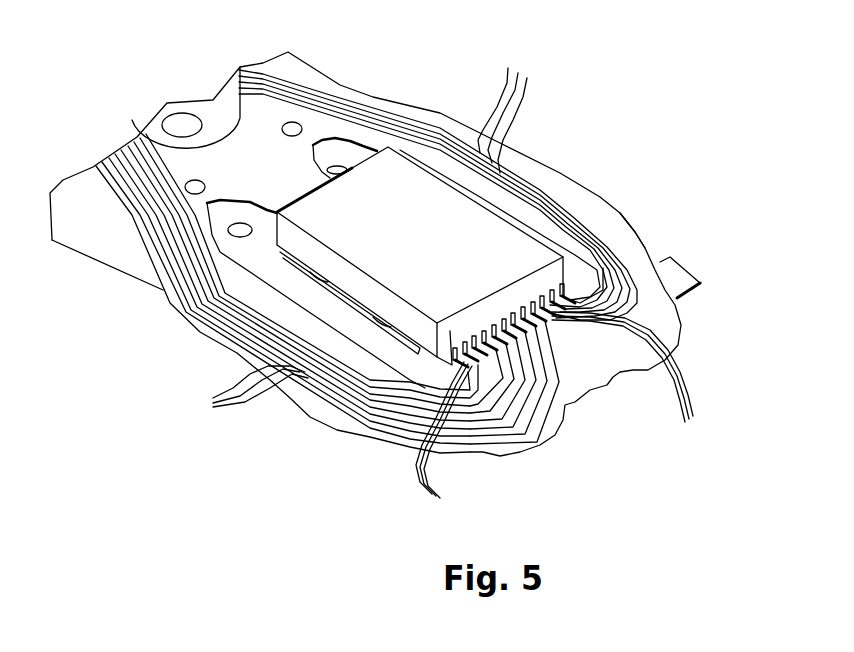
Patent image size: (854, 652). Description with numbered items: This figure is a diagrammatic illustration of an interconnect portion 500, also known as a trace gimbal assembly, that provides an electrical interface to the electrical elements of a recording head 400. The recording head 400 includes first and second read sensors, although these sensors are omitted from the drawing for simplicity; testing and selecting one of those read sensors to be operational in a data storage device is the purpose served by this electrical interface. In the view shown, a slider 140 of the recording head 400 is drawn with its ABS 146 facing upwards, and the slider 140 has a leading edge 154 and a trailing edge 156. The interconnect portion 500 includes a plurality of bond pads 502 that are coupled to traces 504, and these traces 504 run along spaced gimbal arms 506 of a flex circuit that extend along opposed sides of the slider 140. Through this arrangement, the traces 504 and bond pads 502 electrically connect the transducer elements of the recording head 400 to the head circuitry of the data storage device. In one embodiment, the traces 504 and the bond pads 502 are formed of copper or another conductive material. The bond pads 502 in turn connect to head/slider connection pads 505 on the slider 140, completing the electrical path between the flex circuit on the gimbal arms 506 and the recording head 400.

The interconnect portion 500 is at (440, 254).
The gimbal arms 506 is at (392, 266).
The traces 504 is at (357, 230).
The slider 140 is at (555, 225).
The recording head 400 is at (661, 230).
The ABS 146 is at (455, 272).
The leading edge 154 is at (352, 107).
The trailing edge 156 is at (568, 372).
The bond pads 502 is at (635, 372).
The head/slider connection pads 505 is at (444, 440).